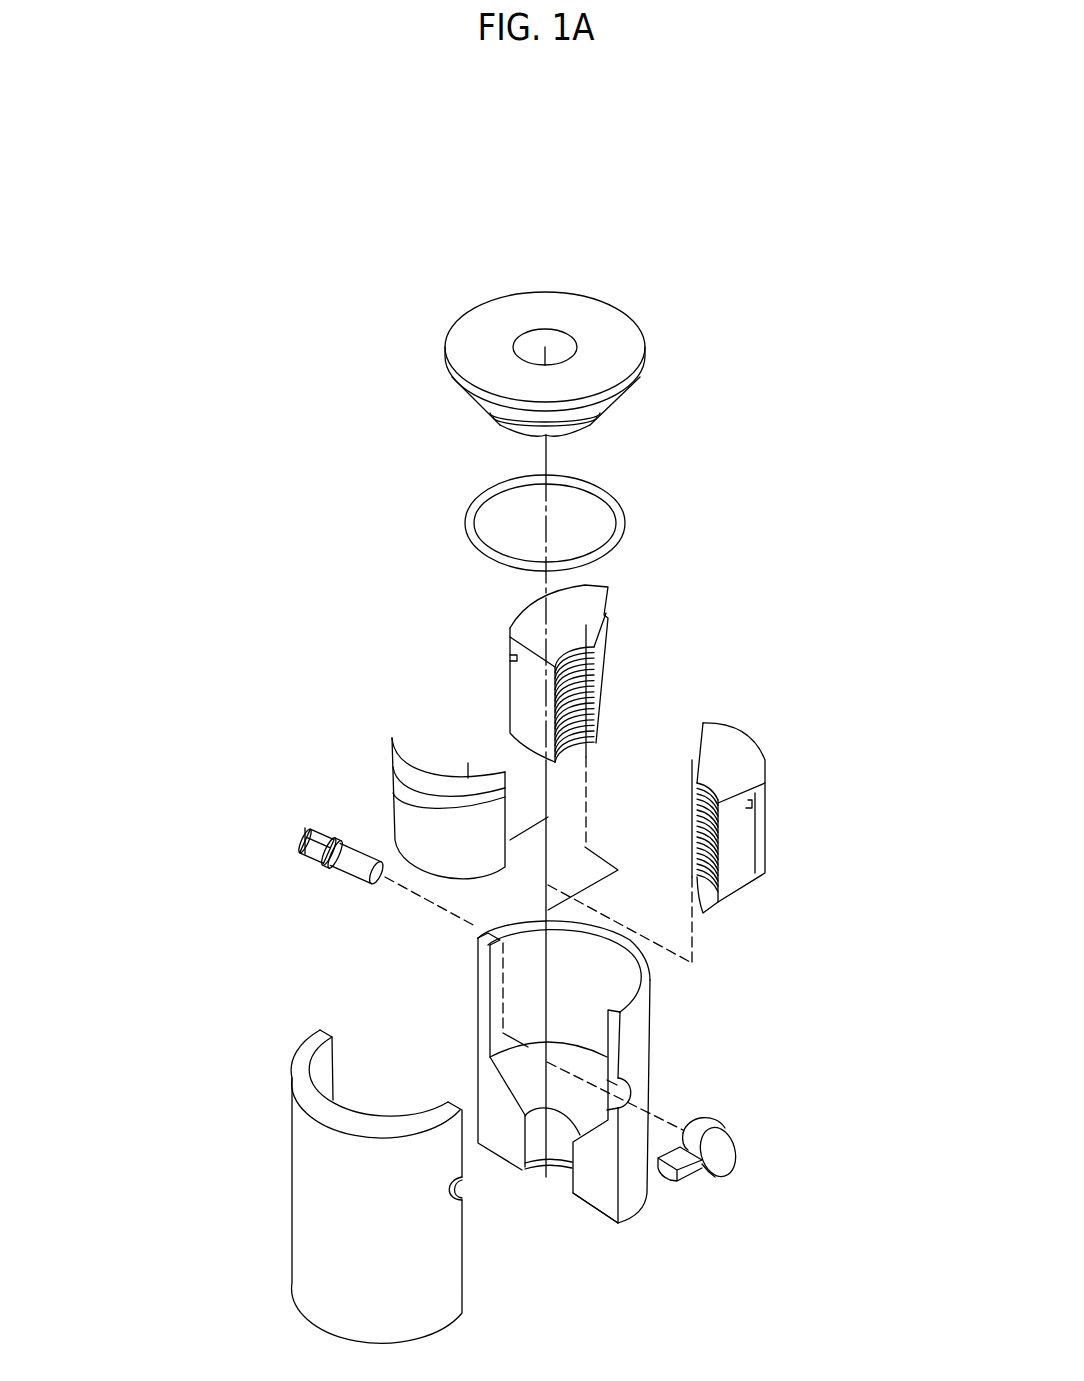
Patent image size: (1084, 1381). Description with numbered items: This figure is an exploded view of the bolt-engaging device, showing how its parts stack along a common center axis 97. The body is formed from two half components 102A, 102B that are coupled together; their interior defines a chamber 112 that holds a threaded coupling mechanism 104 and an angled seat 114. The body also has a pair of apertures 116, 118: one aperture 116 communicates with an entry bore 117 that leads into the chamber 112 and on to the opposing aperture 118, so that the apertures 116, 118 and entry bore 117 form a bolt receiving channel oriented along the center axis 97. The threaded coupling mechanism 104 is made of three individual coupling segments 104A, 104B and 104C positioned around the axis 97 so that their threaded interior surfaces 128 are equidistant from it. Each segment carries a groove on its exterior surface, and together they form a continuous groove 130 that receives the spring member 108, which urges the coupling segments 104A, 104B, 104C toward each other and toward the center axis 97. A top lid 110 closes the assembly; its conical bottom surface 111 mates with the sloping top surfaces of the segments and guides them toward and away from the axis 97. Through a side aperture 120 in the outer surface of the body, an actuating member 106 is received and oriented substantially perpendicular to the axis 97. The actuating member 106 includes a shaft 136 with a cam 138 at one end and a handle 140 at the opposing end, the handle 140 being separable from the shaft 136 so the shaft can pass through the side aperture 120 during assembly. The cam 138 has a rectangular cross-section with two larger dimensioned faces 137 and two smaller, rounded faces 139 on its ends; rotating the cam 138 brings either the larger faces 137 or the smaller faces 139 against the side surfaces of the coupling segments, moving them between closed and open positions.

The center axis 97 is at (547, 463).
The half component 102A is at (307, 1153).
The half component 102B is at (543, 1142).
The threaded coupling mechanism 104 is at (748, 678).
The coupling segment 104A is at (416, 830).
The coupling segment 104B is at (525, 627).
The coupling segment 104C is at (747, 870).
The actuating member 106 is at (287, 813).
The spring member 108 is at (625, 528).
The top lid 110 is at (569, 334).
The conical bottom surface 111 is at (517, 425).
The chamber 112 is at (582, 972).
The angled seat 114 is at (528, 1078).
The aperture 116 is at (550, 1188).
The entry bore 117 is at (533, 1142).
The aperture 118 is at (545, 352).
The side aperture 120 is at (625, 1090).
The threaded interior surface 128 is at (592, 688).
The groove 130 is at (397, 773).
The shaft 136 is at (353, 873).
The larger dimensioned face 137 is at (323, 828).
The cam 138 is at (308, 840).
The smaller dimensioned face 139 is at (307, 852).
The handle 140 is at (730, 1133).